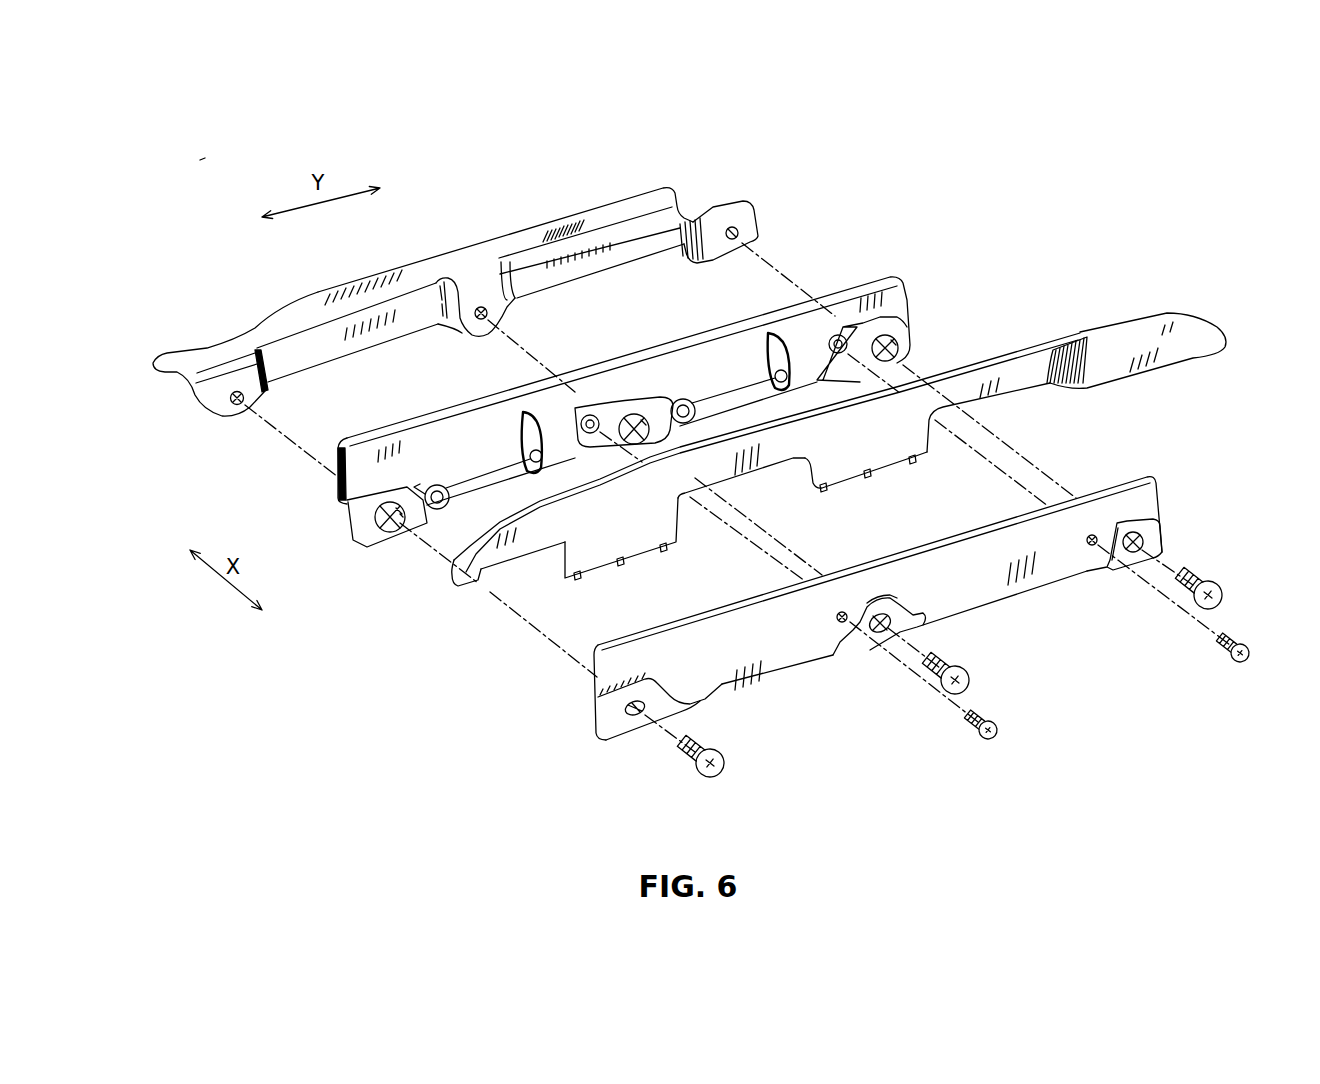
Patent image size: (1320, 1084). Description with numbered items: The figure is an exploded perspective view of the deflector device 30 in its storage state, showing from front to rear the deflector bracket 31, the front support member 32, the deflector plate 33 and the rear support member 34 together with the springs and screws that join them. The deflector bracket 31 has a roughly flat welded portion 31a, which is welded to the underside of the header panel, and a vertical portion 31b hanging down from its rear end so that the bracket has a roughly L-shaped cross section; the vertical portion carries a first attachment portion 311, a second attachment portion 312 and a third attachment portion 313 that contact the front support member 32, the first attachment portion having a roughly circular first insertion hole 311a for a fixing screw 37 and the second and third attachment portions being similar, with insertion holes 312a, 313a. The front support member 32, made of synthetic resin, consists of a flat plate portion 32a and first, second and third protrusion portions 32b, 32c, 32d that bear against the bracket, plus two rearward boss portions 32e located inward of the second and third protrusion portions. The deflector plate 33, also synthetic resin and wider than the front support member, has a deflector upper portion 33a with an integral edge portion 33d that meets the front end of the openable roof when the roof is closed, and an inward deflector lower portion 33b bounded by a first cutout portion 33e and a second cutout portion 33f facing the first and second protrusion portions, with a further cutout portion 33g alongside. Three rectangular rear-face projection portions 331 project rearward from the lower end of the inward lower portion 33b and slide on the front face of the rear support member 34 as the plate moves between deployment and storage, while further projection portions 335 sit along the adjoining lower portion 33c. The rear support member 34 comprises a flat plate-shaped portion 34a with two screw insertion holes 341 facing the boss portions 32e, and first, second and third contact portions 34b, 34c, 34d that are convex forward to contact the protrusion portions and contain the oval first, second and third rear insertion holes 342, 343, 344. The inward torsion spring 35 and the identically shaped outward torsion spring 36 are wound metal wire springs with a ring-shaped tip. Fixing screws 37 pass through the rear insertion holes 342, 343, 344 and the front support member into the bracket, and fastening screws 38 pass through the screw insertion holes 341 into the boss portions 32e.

The holder unit 30 is at (205, 147).
The deflector bracket 31 is at (491, 297).
The welded portion 31a is at (597, 213).
The vertical portion 31b is at (318, 357).
The first attachment portion 311 is at (234, 383).
The first insertion hole 311a is at (237, 406).
The second attachment portion 312 is at (457, 302).
The hole of bent portion 312a is at (480, 307).
The third attachment portion 313 is at (750, 239).
The hole of mounting tab 313a is at (734, 240).
The front support member 32 is at (624, 378).
The flat plate portion 32a is at (905, 300).
The first protrusion portion 32b is at (350, 526).
The second protrusion portion 32c is at (633, 415).
The third protrusion portion 32d is at (905, 352).
The boss portion 32e is at (584, 417).
The deflector plate 33 is at (797, 439).
The deflector upper portion 33a is at (470, 577).
The inward deflector lower portion 33b is at (642, 566).
The protruding portion 33c is at (890, 470).
The edge portion 33d is at (1046, 353).
The first cutout portion 33e is at (505, 586).
The second cutout portion 33f is at (748, 503).
The recess 33g is at (1000, 431).
The rear-face projection portion 331 is at (582, 583).
The projection 335 is at (826, 491).
The rear support member 34 is at (861, 607).
The flat plate-shaped portion 34a is at (1050, 574).
The first contact portion 34b is at (614, 734).
The second contact portion 34c is at (867, 667).
The third contact portion 34d is at (1151, 559).
The screw insertion hole 341 is at (846, 611).
The first rear insertion hole 342 is at (636, 718).
The second rear insertion hole 343 is at (882, 634).
The third rear insertion hole 344 is at (1134, 553).
The inward torsion spring 35 is at (462, 460).
The outward torsion spring 36 is at (687, 374).
The fixing screw 37 is at (739, 747).
The fastening screw 38 is at (976, 754).